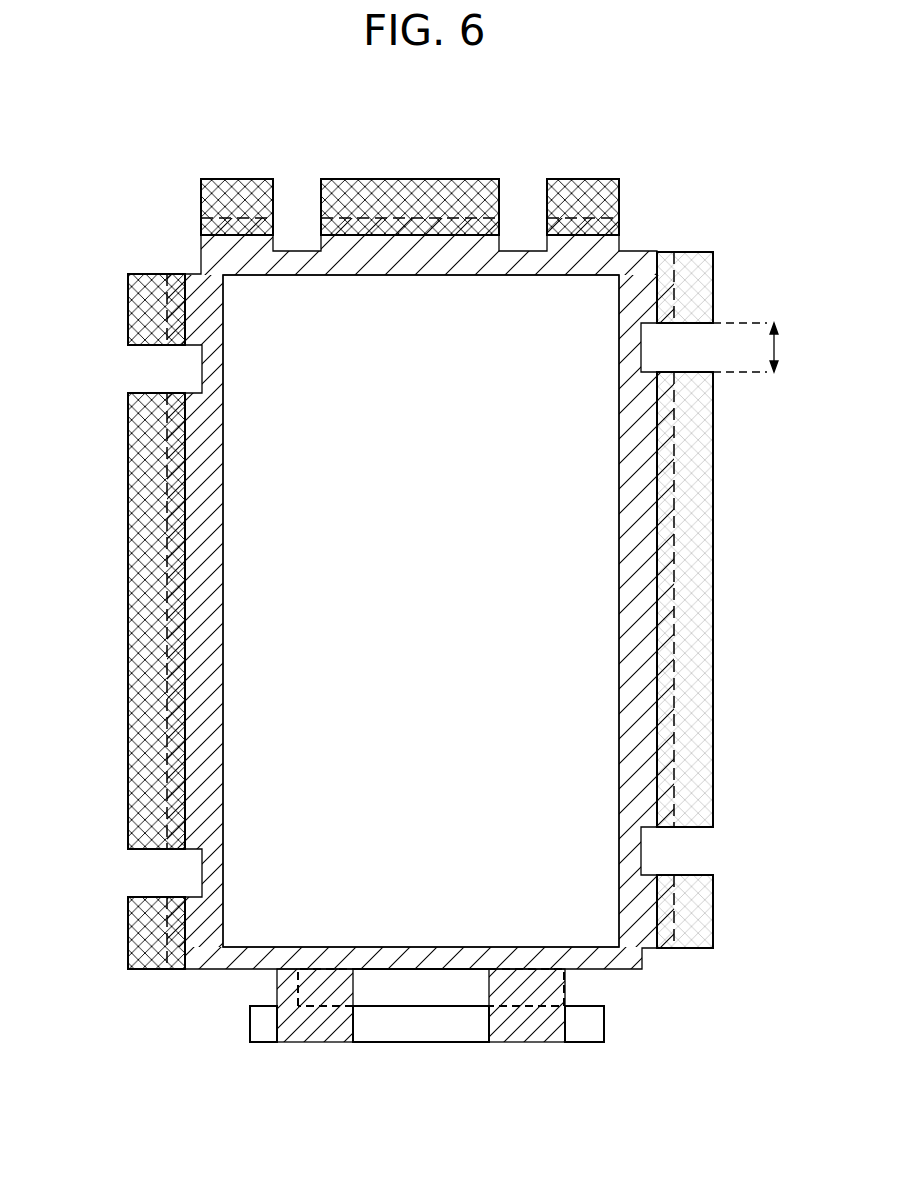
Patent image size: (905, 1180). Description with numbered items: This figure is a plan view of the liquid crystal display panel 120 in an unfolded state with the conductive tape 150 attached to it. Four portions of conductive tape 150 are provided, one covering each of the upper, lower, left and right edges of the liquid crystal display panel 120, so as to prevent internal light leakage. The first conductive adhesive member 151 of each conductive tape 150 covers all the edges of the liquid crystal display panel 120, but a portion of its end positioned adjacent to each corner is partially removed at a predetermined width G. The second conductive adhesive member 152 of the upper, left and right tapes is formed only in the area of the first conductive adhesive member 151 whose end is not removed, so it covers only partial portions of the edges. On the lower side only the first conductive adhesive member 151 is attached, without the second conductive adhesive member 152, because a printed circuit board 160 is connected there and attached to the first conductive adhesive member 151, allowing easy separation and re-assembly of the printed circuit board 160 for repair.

The liquid crystal display panel 120 is at (424, 594).
The conductive tape 150 is at (682, 121).
The first conductive adhesive member 151 is at (587, 254).
The second conductive adhesive member 152 is at (553, 182).
The printed circuit board 160 is at (430, 1020).
The predetermined width G is at (755, 347).